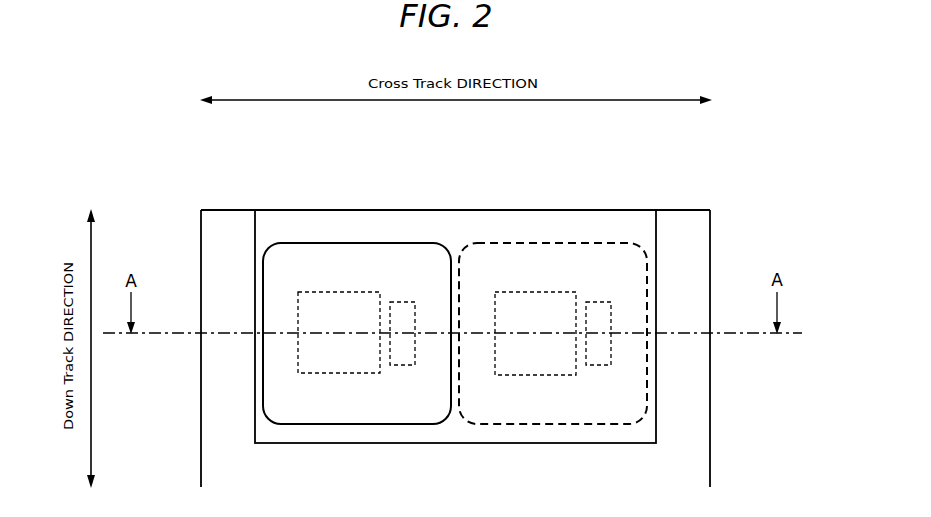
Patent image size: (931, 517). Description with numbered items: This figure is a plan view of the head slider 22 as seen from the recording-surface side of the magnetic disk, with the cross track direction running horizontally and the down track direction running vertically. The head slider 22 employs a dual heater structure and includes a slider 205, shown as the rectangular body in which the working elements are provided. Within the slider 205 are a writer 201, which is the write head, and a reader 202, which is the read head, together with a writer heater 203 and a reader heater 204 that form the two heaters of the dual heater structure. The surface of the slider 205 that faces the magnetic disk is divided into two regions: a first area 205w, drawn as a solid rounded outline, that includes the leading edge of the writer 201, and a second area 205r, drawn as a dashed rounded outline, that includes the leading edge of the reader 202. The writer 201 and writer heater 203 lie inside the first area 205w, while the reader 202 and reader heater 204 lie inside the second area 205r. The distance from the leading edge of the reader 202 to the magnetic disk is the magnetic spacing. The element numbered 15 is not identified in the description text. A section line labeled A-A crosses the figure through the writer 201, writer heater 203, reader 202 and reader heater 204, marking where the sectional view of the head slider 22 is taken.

The head slider 22 is at (641, 163).
The slider 15 is at (220, 425).
The slider 205 is at (271, 228).
The first area 205w is at (358, 405).
The second area 205r is at (551, 408).
The writer 201 is at (328, 305).
The reader 202 is at (533, 305).
The writer heater 203 is at (402, 305).
The reader heater 204 is at (600, 305).